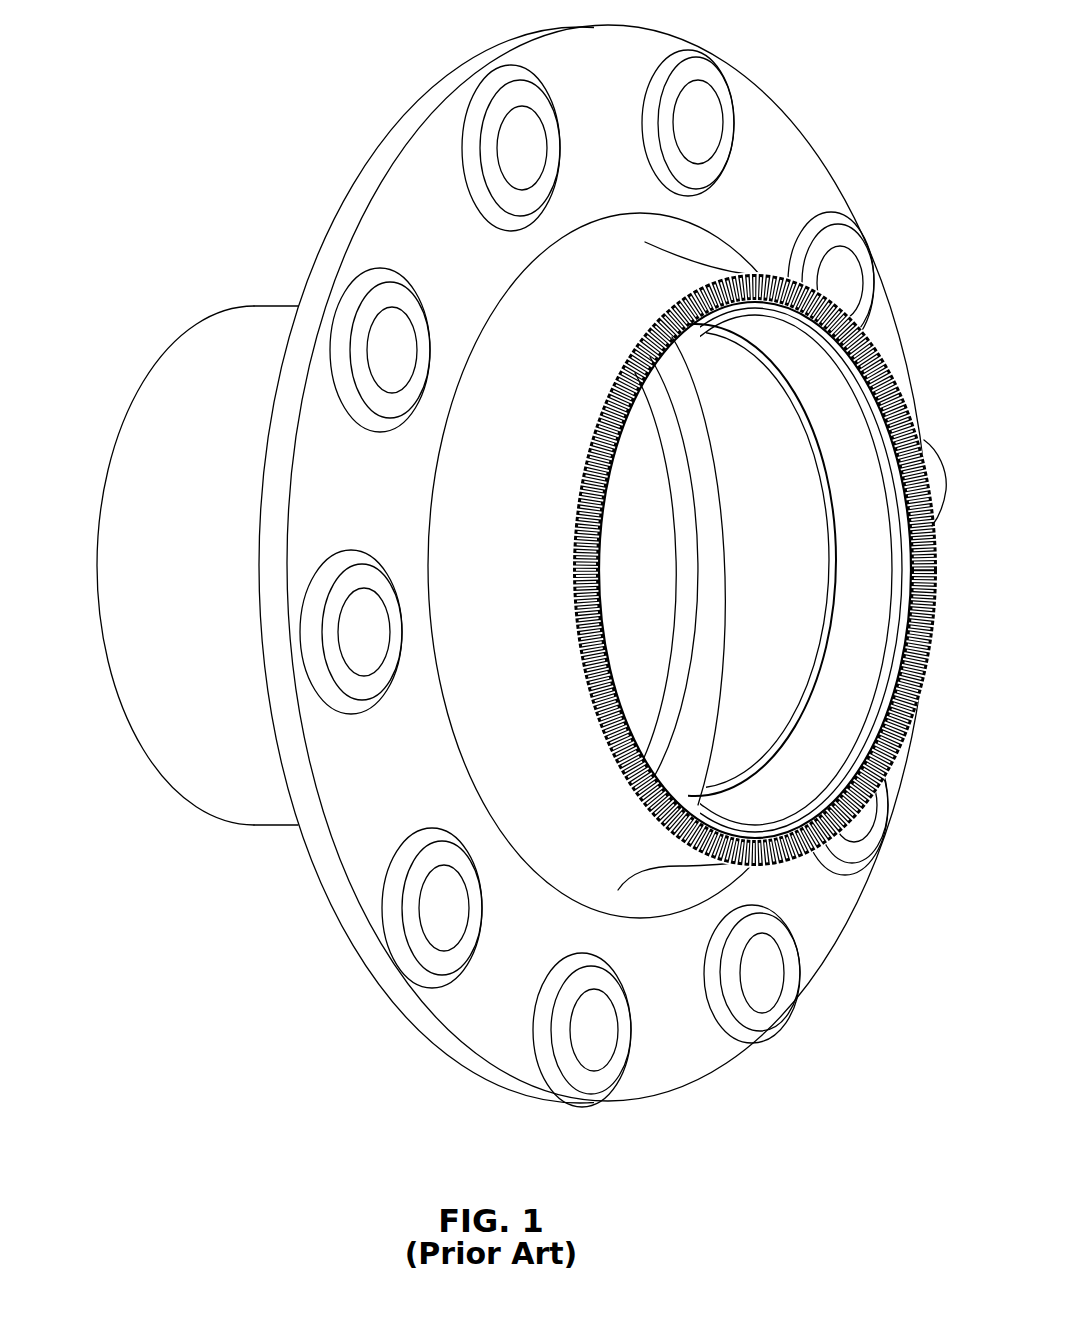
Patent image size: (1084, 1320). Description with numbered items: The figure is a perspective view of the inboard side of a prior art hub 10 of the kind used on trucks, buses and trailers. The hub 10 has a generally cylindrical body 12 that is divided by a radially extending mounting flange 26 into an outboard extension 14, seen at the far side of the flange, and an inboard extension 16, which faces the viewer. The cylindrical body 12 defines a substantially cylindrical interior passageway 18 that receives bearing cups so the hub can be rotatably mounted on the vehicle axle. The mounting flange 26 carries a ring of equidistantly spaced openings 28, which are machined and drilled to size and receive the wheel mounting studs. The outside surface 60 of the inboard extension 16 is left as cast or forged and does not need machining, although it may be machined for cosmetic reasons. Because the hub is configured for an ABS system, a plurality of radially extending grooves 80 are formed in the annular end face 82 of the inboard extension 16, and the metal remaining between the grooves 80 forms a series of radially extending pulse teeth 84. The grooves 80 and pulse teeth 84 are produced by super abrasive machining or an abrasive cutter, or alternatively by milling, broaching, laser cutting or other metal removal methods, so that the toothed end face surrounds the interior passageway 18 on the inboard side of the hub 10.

The hub 10 is at (294, 134).
The cylindrical body 12 is at (203, 790).
The outboard extension 14 is at (149, 712).
The inboard extension 16 is at (618, 887).
The interior passageway 18 is at (650, 625).
The mounting flange 26 is at (422, 183).
The openings 28 is at (380, 343).
The outside surface 60 is at (519, 521).
The grooves 80 is at (598, 565).
The annular end face 82 is at (645, 430).
The pulse teeth 84 is at (607, 493).